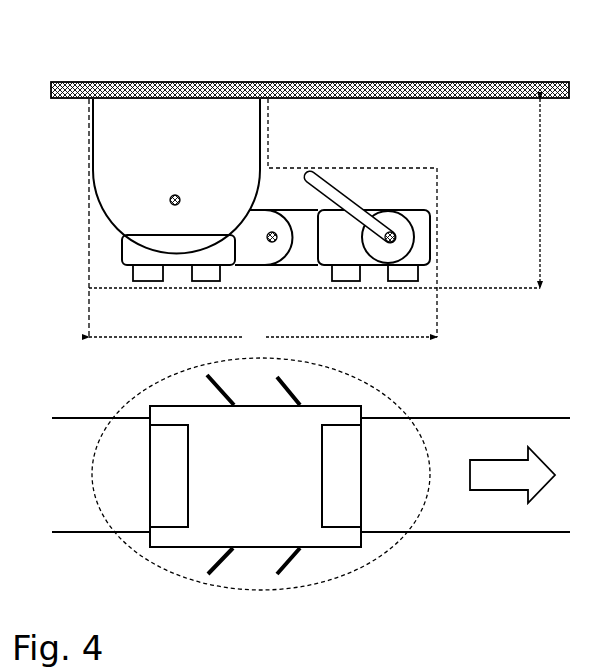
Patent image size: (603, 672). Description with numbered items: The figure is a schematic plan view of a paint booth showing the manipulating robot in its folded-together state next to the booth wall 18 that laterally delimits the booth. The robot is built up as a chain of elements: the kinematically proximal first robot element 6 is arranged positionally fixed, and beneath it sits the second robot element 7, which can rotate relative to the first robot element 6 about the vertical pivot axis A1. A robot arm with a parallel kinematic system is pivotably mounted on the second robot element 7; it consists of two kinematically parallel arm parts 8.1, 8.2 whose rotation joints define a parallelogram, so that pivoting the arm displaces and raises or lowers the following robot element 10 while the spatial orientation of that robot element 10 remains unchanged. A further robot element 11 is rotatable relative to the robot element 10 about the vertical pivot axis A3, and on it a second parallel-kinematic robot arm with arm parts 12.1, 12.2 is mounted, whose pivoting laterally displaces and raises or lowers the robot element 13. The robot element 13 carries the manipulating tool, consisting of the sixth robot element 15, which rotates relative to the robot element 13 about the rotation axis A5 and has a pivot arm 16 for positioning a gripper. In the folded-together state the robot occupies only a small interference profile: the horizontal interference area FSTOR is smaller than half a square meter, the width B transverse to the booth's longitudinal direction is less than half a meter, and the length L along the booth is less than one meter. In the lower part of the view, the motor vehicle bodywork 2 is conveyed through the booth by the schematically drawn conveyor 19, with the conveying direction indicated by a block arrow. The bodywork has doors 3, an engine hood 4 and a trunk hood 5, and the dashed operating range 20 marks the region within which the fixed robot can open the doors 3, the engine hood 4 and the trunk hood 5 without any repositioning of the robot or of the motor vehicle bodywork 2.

The booth wall 18 is at (403, 82).
The first robot element 6 is at (120, 155).
The vertical pivot axis A1 is at (168, 203).
The second robot element 7 is at (118, 257).
The arm part 8.1 is at (205, 283).
The arm part 8.2 is at (147, 283).
The robot element 10 is at (247, 258).
The vertical pivot axis A3 is at (273, 246).
The robot element 11 is at (305, 255).
The robot element 13 is at (433, 255).
The sixth robot element 15 is at (403, 240).
The pivot arm 16 is at (328, 192).
The rotation axis A5 is at (392, 230).
The arm part 12.1 is at (350, 279).
The arm part 12.2 is at (403, 279).
The interference area FSTOR is at (437, 186).
The width B is at (526, 193).
The length L is at (263, 339).
The conveyor 19 is at (517, 533).
The motor vehicle bodywork 2 is at (247, 549).
The trunk hood 5 is at (165, 465).
The engine hood 4 is at (338, 503).
The doors 3 is at (205, 387).
The operating range 20 is at (180, 590).